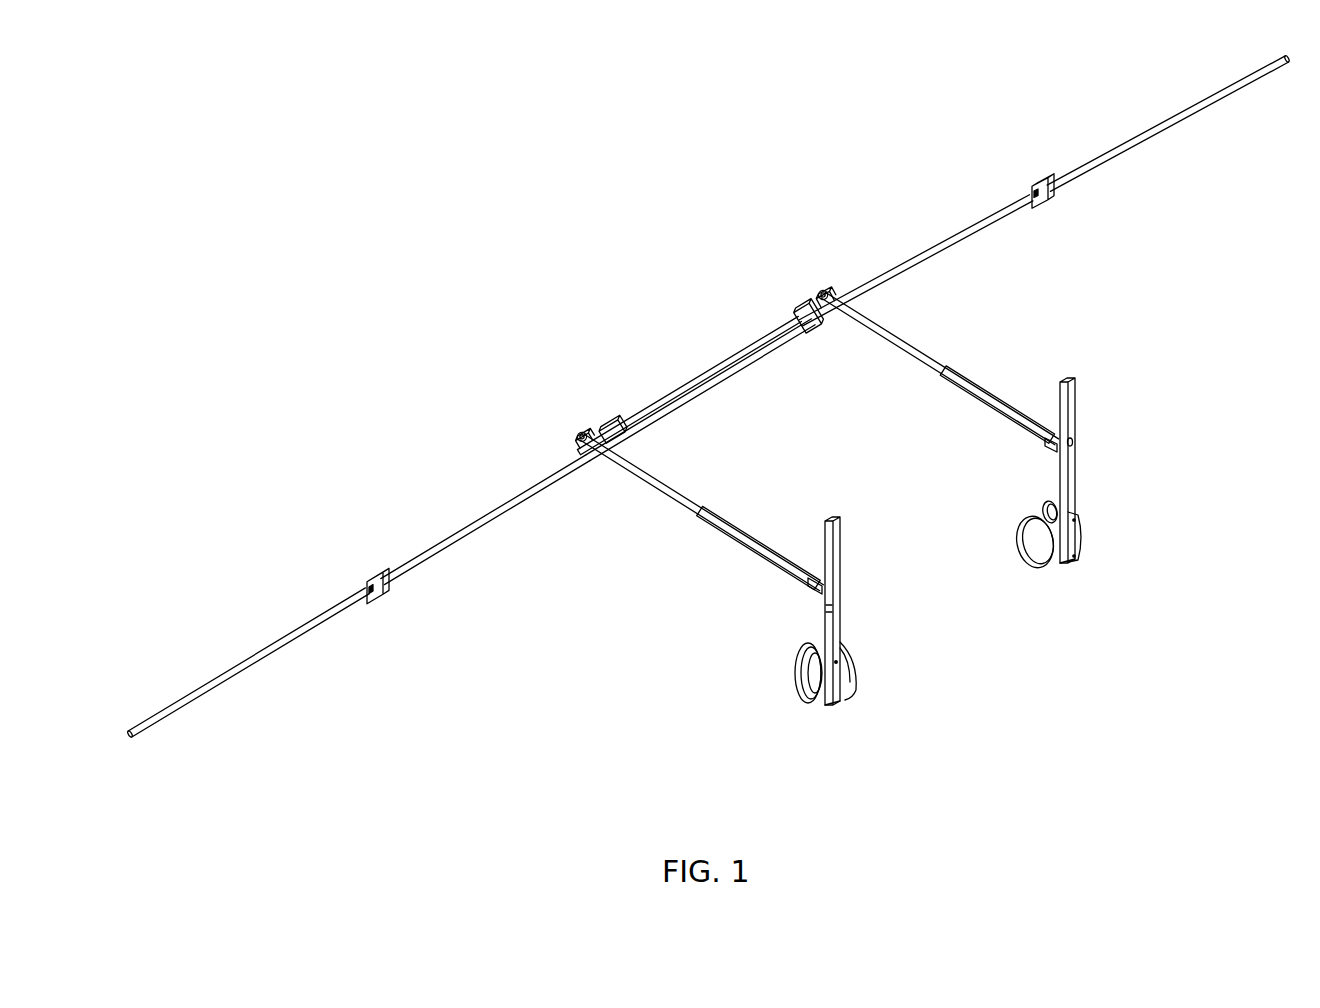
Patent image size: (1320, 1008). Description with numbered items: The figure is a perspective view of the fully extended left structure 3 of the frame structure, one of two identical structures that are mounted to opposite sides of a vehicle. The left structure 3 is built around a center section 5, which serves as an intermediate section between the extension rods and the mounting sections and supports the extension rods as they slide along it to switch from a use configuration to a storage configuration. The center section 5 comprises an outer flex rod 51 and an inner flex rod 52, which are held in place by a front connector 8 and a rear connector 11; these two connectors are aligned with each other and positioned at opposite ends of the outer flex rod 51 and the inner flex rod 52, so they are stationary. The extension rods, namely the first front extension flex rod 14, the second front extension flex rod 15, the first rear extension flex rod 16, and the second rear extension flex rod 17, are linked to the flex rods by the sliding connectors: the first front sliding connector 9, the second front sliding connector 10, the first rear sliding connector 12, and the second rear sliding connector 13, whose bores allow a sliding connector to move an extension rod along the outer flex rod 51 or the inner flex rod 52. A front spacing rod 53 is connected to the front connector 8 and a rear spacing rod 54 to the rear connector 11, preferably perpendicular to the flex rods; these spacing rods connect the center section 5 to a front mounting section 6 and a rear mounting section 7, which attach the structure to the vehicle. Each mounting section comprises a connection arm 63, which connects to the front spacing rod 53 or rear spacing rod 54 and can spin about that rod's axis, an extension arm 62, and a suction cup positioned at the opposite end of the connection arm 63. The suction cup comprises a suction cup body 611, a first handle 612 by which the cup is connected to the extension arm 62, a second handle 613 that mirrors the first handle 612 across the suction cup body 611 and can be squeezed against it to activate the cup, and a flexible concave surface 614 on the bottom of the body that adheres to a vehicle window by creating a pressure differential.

The left structure 3 is at (256, 57).
The center section 5 is at (682, 270).
The front mounting section 6 is at (1158, 403).
The rear mounting section 7 is at (693, 607).
The front connector 8 is at (816, 298).
The first front sliding connector 9 is at (800, 311).
The second front sliding connector 10 is at (1038, 183).
The rear connector 11 is at (578, 436).
The first rear sliding connector 12 is at (622, 438).
The second rear sliding connector 13 is at (374, 578).
The first front extension flex rod 14 is at (932, 255).
The second front extension flex rod 15 is at (1180, 117).
The first rear extension flex rod 16 is at (490, 520).
The second rear extension flex rod 17 is at (242, 671).
The outer flex rod 51 is at (703, 372).
The inner flex rod 52 is at (735, 378).
The front spacing rod 53 is at (905, 345).
The rear spacing rod 54 is at (655, 495).
The extension arm 62 is at (1072, 425).
The connection arm 63 is at (987, 388).
The suction cup body 611 is at (1057, 566).
The first handle 612 is at (1083, 530).
The second handle 613 is at (1050, 505).
The flexible concave surface 614 is at (1038, 560).